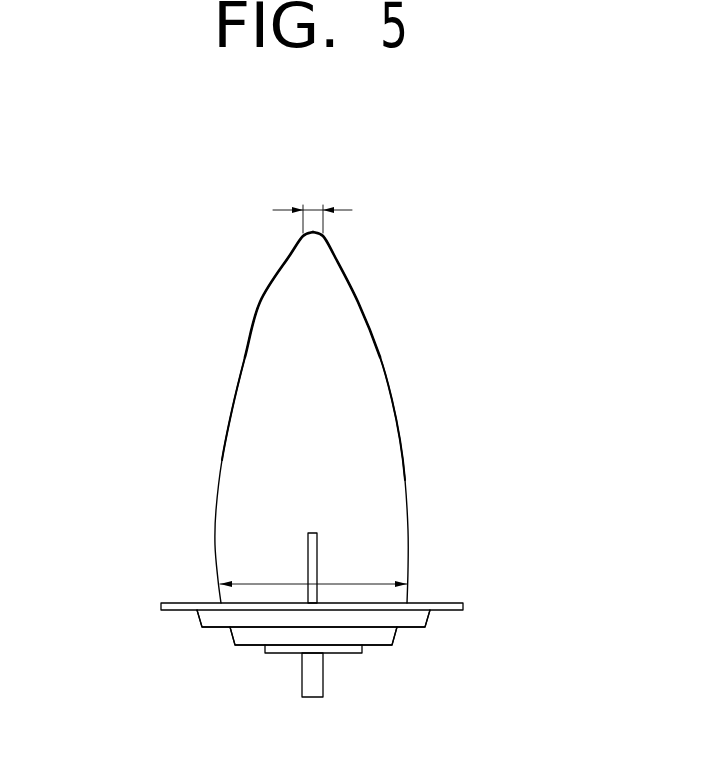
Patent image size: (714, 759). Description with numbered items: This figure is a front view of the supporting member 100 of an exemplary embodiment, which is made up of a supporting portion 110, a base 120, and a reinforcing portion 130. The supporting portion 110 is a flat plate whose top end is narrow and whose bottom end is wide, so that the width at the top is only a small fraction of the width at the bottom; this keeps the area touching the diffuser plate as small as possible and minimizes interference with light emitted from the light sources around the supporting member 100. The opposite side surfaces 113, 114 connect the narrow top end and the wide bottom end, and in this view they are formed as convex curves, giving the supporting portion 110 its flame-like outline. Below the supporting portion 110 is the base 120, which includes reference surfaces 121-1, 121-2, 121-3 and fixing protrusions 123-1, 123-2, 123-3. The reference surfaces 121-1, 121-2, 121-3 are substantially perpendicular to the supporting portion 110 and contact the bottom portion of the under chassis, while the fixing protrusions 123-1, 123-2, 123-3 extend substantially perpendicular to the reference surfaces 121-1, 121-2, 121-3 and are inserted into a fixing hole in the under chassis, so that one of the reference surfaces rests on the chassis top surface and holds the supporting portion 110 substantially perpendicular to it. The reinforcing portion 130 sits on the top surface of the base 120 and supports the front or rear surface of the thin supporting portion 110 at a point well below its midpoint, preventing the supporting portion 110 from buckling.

The supporting member 100 is at (398, 212).
The supporting portion 110 is at (343, 321).
The side surface 113 is at (245, 357).
The side surface 114 is at (385, 367).
The reinforcing portion 130 is at (313, 545).
The base 120 is at (157, 635).
The reference surface 121-1 is at (250, 647).
The reference surface 121-2 is at (210, 628).
The reference surface 121-3 is at (172, 618).
The fixing protrusion 123-1 is at (343, 650).
The fixing protrusion 123-2 is at (378, 637).
The fixing protrusion 123-3 is at (410, 620).